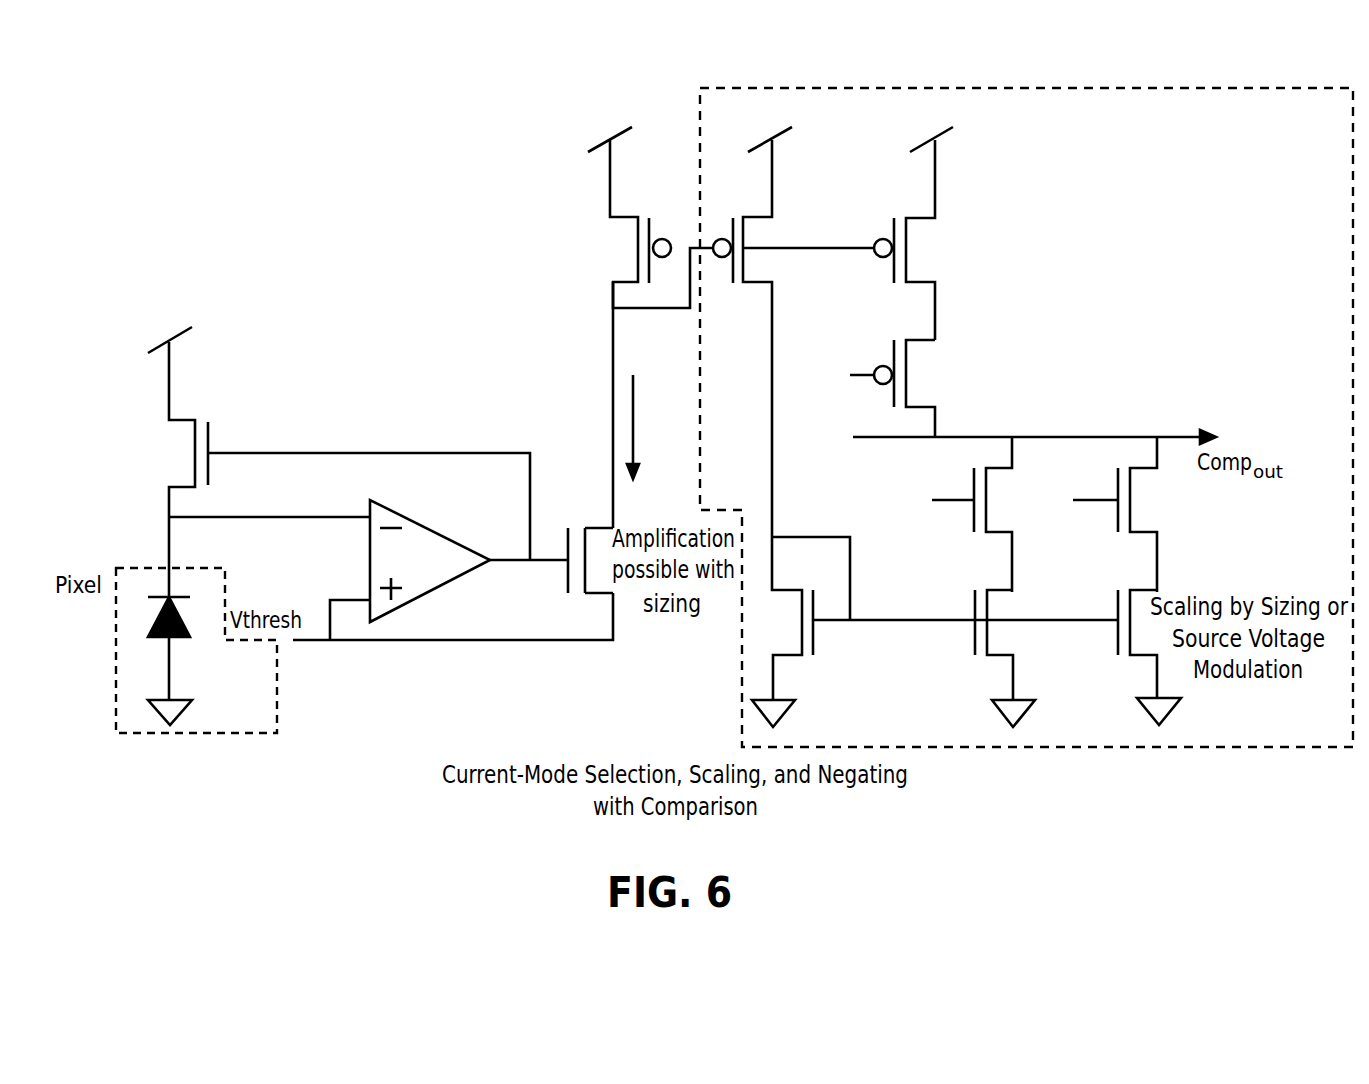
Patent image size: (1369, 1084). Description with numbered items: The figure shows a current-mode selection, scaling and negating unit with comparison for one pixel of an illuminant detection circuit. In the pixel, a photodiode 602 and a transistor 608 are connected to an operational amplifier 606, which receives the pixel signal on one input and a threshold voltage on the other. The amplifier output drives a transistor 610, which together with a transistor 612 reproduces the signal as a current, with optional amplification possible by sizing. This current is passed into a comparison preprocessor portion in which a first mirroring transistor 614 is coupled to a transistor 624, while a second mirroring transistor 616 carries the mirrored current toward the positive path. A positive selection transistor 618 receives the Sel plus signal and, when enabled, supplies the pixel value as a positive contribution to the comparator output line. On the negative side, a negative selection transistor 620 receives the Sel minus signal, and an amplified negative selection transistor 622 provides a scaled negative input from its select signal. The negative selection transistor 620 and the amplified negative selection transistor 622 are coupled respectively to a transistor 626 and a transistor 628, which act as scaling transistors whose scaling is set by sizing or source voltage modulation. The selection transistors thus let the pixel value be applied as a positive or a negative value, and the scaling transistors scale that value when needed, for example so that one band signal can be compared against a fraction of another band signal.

The photodiode 602 is at (188, 648).
The operational amplifier 606 is at (433, 525).
The transistor 608 is at (190, 419).
The transistor 610 is at (598, 528).
The transistor 612 is at (632, 250).
The first mirroring transistor 614 is at (760, 217).
The second mirroring transistor 616 is at (913, 218).
The positive selection transistor 618 is at (912, 372).
The negative selection transistor 620 is at (990, 518).
The amplified negative selection transistor 622 is at (1135, 510).
The transistor 624 is at (815, 640).
The transistor 626 is at (990, 590).
The transistor 628 is at (1130, 590).